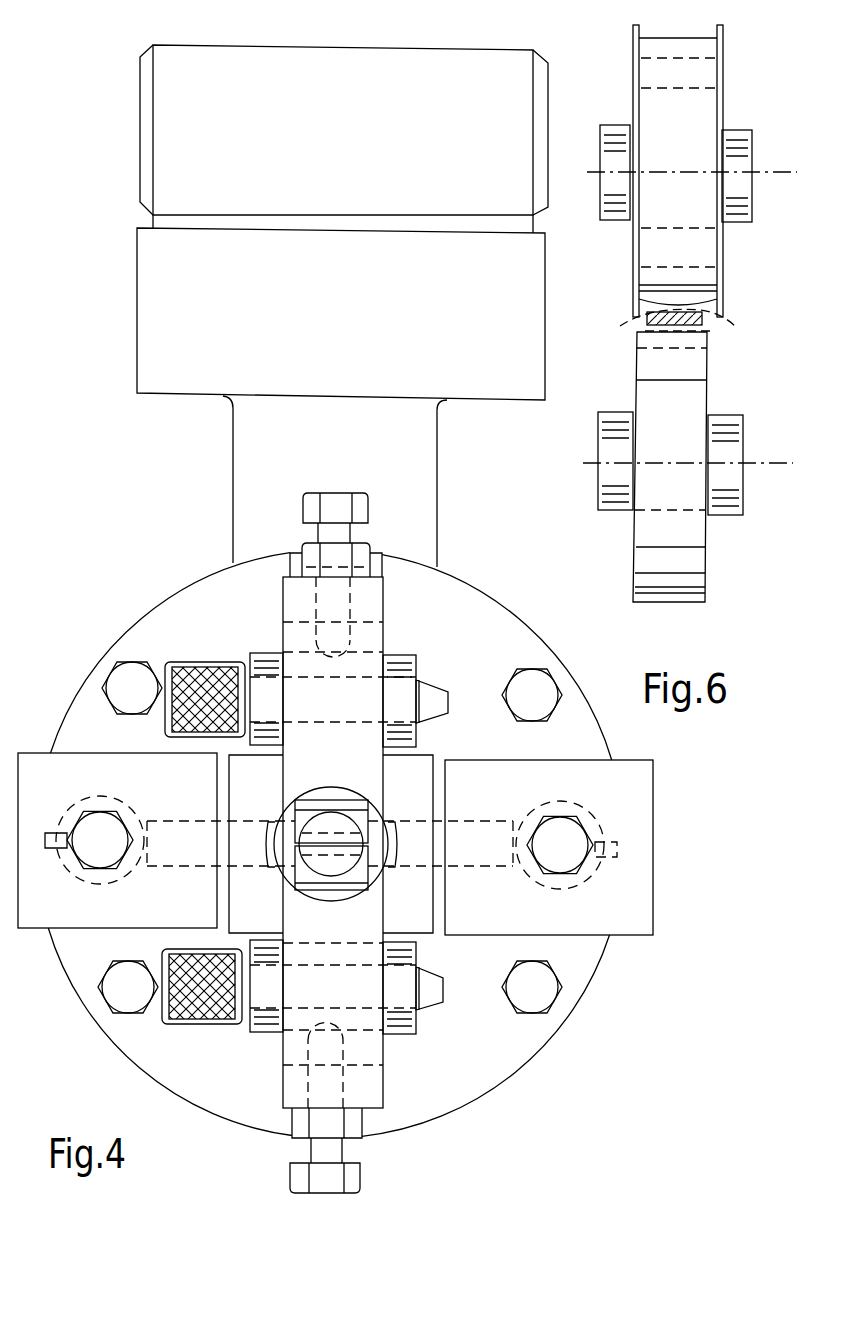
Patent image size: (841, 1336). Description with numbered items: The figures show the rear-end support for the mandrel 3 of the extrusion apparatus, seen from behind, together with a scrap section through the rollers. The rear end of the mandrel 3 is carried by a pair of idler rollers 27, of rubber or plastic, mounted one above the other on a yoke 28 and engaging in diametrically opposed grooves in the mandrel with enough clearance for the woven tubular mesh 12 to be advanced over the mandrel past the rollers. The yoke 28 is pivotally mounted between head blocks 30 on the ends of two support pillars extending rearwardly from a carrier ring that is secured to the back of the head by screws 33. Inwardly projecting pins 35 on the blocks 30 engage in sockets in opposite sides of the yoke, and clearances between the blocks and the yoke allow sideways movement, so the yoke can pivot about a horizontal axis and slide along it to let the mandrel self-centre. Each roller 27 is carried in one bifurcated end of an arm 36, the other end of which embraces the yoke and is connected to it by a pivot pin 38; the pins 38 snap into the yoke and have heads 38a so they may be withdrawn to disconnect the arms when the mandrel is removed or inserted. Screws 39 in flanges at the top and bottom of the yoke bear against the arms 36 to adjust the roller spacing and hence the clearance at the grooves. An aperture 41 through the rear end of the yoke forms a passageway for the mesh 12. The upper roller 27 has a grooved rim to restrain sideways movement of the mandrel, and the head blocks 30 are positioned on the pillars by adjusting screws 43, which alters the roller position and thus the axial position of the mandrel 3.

In FIG. 4, the mandrel 3 is at (350, 828).
In FIG. 6, the mandrel 3 is at (667, 322).
In FIG. 6, the woven tubular mesh 12 is at (722, 330).
In FIG. 4, the idler rollers 27 is at (290, 810).
In FIG. 6, the idler rollers 27 is at (722, 68).
In FIG. 4, the yoke 28 is at (383, 632).
In FIG. 4, the head blocks 30 is at (652, 770).
In FIG. 4, the screws 33 is at (118, 683).
In FIG. 4, the pins 35 is at (220, 866).
In FIG. 4, the arms 36 is at (413, 667).
In FIG. 6, the arms 36 is at (612, 127).
In FIG. 4, the pivot pin 38 is at (440, 695).
In FIG. 4, the heads 38a is at (182, 672).
In FIG. 4, the screws 39 is at (372, 506).
In FIG. 4, the aperture 41 is at (372, 875).
In FIG. 4, the screws 43 is at (87, 830).